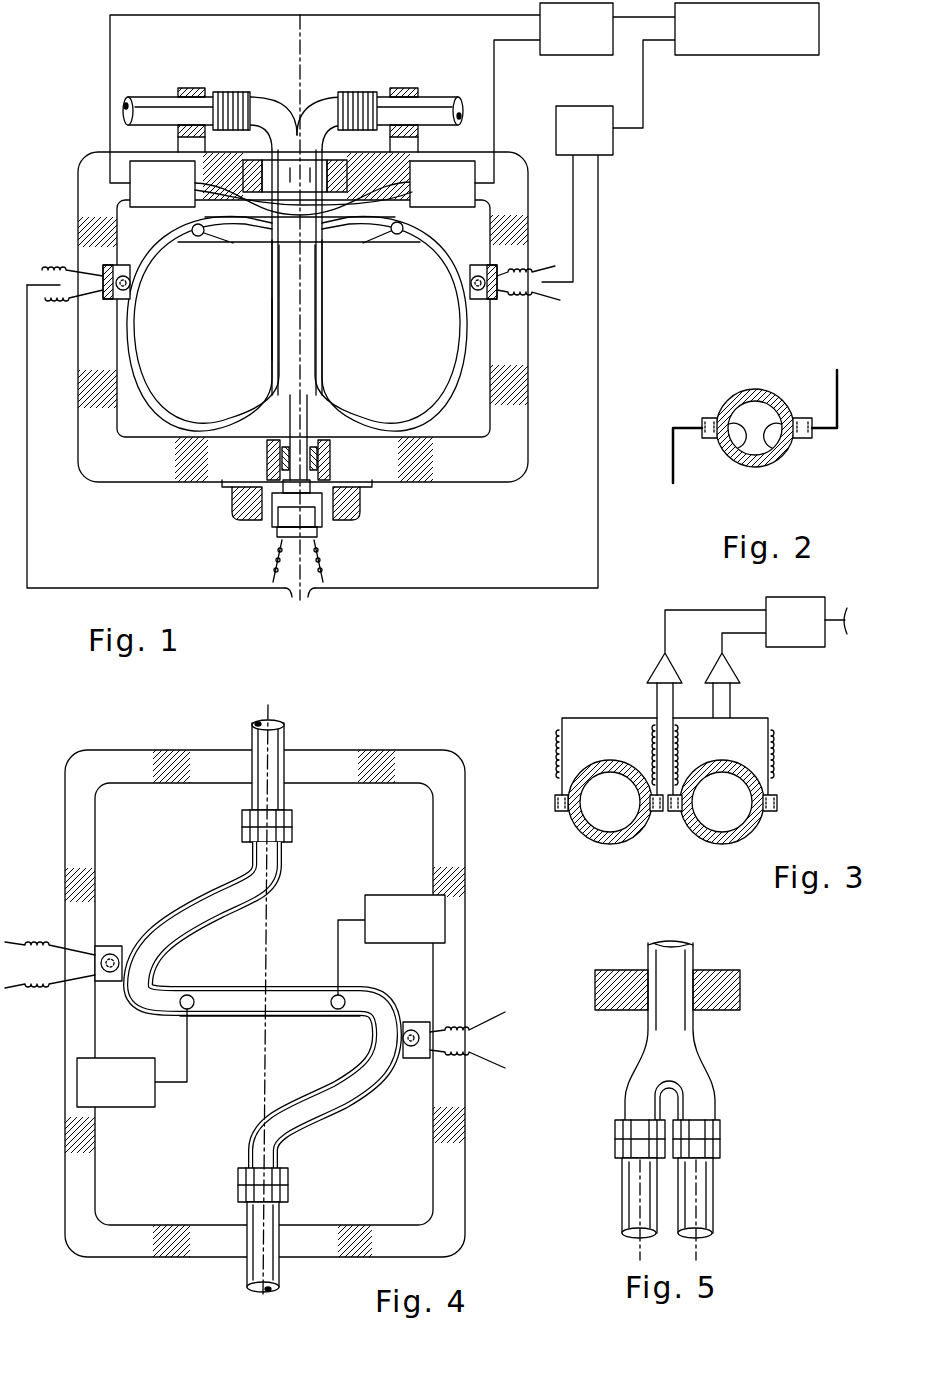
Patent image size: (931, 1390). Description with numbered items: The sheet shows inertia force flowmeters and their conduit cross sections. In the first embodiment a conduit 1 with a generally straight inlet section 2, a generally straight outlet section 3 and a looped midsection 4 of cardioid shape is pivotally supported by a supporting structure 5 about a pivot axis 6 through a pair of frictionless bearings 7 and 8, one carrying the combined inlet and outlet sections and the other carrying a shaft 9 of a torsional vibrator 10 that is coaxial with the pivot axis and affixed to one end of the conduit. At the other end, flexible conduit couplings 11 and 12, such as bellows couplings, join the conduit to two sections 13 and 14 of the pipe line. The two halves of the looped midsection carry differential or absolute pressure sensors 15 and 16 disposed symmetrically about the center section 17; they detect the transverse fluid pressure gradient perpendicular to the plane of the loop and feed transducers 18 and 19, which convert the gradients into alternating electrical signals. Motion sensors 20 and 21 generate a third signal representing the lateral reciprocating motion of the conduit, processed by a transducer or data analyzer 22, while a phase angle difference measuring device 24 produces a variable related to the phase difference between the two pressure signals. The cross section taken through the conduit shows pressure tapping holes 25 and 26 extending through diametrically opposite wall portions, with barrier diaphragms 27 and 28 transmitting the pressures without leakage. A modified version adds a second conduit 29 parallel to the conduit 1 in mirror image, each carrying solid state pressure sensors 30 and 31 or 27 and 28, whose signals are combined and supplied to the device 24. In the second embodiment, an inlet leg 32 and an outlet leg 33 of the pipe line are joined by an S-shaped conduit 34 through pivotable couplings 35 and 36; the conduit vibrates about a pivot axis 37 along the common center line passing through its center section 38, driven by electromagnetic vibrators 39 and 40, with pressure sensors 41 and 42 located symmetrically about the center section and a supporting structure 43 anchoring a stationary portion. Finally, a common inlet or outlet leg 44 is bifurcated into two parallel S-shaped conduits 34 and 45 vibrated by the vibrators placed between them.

In FIG. 1, the conduit 1 is at (430, 397).
In FIG. 2, the conduit 1 is at (753, 389).
In FIG. 3, the conduit 1 is at (722, 845).
In FIG. 1, the inlet section 2 is at (400, 75).
In FIG. 1, the outlet section 3 is at (325, 357).
In FIG. 1, the looped midsection 4 is at (197, 390).
In FIG. 1, the supporting structure 5 is at (145, 462).
In FIG. 1, the pivot axis 6 is at (298, 612).
In FIG. 1, the frictionless bearing 7 is at (292, 232).
In FIG. 1, the frictionless bearing 8 is at (327, 453).
In FIG. 1, the shaft 9 is at (265, 432).
In FIG. 1, the torsional vibrator 10 is at (287, 507).
In FIG. 1, the flexible conduit coupling 11 is at (237, 92).
In FIG. 1, the flexible conduit coupling 12 is at (352, 92).
In FIG. 1, the pipe line section 13 is at (165, 97).
In FIG. 1, the pipe line section 14 is at (440, 97).
In FIG. 1, the pressure sensor 15 is at (198, 238).
In FIG. 1, the pressure sensor 16 is at (402, 234).
In FIG. 1, the center section 17 is at (305, 245).
In FIG. 1, the transducer 18 is at (130, 196).
In FIG. 1, the transducer 19 is at (476, 195).
In FIG. 1, the motion sensor 20 is at (128, 262).
In FIG. 1, the motion sensor 21 is at (487, 298).
In FIG. 1, the transducer or data analyzer 22 is at (600, 157).
In FIG. 3, the phase angle difference measuring device 24 is at (790, 648).
In FIG. 2, the pressure tapping hole 25 is at (728, 450).
In FIG. 2, the pressure tapping hole 26 is at (782, 450).
In FIG. 2, the barrier diaphragm 27 is at (705, 417).
In FIG. 3, the barrier diaphragm 27 is at (675, 812).
In FIG. 2, the barrier diaphragm 28 is at (808, 417).
In FIG. 3, the barrier diaphragm 28 is at (777, 802).
In FIG. 3, the conduit 29 is at (612, 845).
In FIG. 3, the solid state pressure sensor 30 is at (555, 802).
In FIG. 3, the solid state pressure sensor 31 is at (658, 812).
In FIG. 4, the inlet leg 32 is at (287, 735).
In FIG. 4, the outlet leg 33 is at (279, 1272).
In FIG. 4, the S-shaped conduit 34 is at (328, 1110).
In FIG. 5, the S-shaped conduit 34 is at (620, 1185).
In FIG. 4, the pivotable conduit coupling 35 is at (292, 827).
In FIG. 4, the pivotable conduit coupling 36 is at (238, 1182).
In FIG. 4, the pivot axis 37 is at (258, 723).
In FIG. 4, the center section 38 is at (248, 1014).
In FIG. 4, the electromagnetic vibrator 39 is at (118, 945).
In FIG. 4, the electromagnetic vibrator 40 is at (412, 1060).
In FIG. 4, the pressure sensor 41 is at (193, 997).
In FIG. 4, the pressure sensor 42 is at (332, 997).
In FIG. 4, the supporting structure 43 is at (135, 1242).
In FIG. 5, the common inlet or outlet leg 44 is at (673, 988).
In FIG. 5, the S-shaped conduit 45 is at (715, 1180).